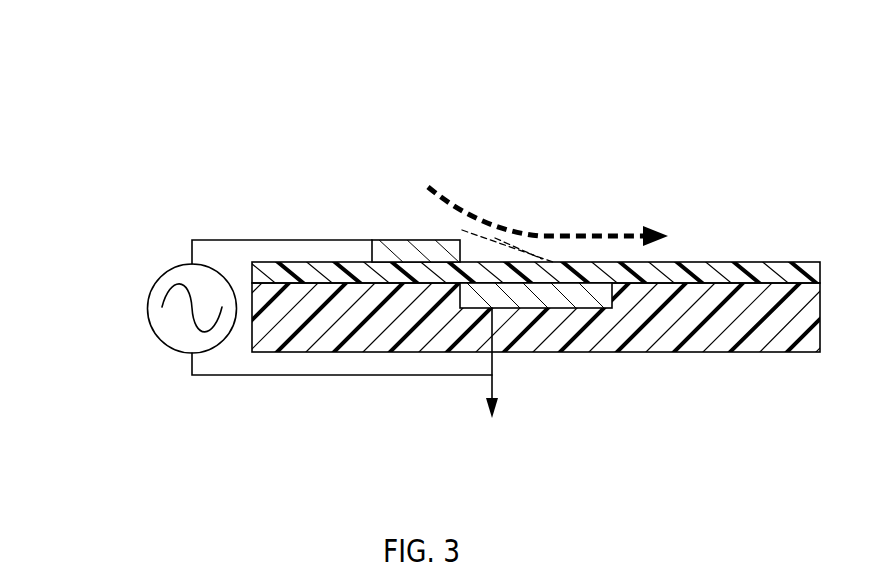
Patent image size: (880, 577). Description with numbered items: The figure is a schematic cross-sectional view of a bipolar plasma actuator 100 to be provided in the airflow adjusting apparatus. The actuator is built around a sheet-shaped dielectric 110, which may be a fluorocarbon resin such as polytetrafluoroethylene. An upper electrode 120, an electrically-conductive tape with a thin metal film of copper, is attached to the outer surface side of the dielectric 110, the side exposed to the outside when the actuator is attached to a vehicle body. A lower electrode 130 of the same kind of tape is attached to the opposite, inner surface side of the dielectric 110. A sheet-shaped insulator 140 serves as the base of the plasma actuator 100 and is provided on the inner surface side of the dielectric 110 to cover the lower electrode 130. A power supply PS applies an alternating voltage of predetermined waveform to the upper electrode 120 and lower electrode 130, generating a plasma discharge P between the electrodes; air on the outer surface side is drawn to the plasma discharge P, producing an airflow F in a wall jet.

The bipolar plasma actuator 100 is at (312, 137).
The dielectric 110 is at (720, 261).
The upper electrode 120 is at (410, 240).
The lower electrode 130 is at (558, 303).
The insulator 140 is at (672, 352).
The plasma discharge P is at (495, 236).
The airflow F is at (590, 234).
The power supply PS is at (162, 277).